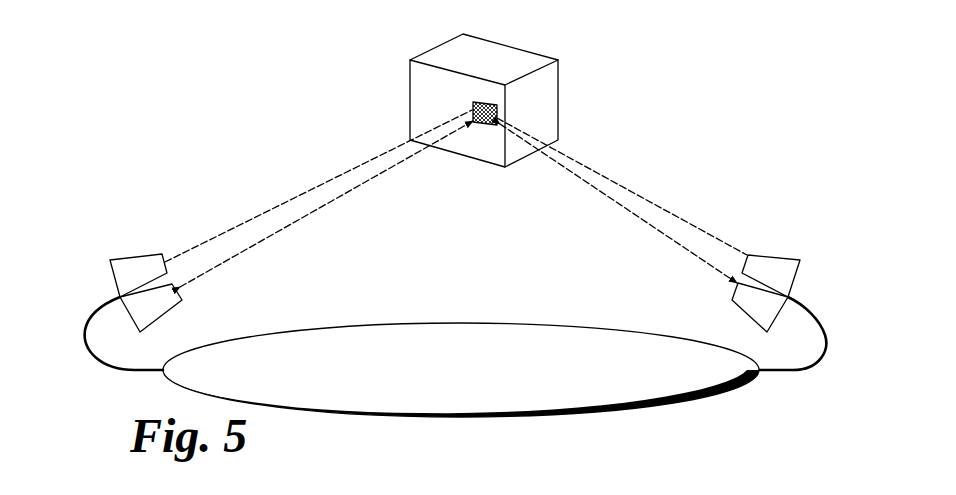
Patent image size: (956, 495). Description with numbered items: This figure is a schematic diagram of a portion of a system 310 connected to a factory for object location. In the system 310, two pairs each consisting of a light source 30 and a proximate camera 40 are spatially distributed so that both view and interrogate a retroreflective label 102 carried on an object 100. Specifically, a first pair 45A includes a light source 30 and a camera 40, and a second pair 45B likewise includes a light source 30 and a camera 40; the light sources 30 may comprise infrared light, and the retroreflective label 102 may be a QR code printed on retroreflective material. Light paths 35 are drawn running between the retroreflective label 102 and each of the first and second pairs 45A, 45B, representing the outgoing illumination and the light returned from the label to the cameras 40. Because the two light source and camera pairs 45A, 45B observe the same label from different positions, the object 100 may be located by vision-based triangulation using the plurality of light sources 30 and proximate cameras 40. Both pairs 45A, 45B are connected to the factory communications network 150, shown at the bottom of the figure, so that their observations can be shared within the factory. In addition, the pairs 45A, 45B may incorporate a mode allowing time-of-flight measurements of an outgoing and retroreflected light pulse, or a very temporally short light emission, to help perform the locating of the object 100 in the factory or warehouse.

The system 310 is at (182, 88).
The object 100 is at (555, 58).
The retroreflective label 102 is at (478, 121).
The optical / signal paths 35 is at (335, 203).
The factory communications network 150 is at (440, 325).
The first pair 45A is at (97, 242).
The second pair 45B is at (803, 205).
The light source 30 is at (138, 257).
The camera 40 is at (175, 305).